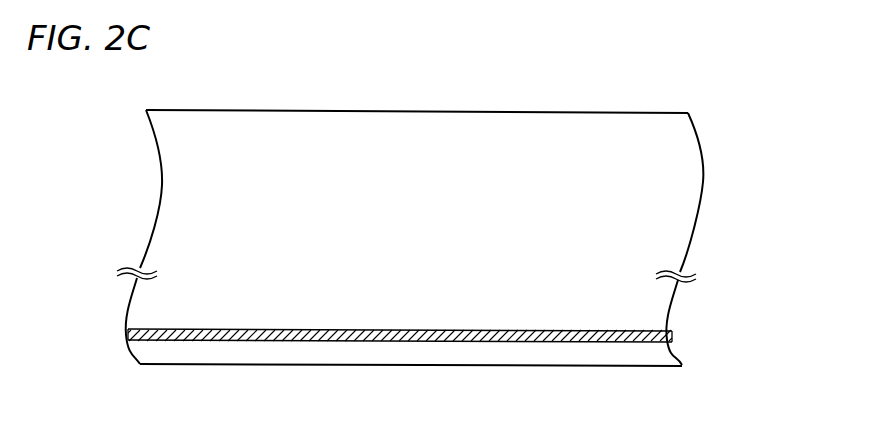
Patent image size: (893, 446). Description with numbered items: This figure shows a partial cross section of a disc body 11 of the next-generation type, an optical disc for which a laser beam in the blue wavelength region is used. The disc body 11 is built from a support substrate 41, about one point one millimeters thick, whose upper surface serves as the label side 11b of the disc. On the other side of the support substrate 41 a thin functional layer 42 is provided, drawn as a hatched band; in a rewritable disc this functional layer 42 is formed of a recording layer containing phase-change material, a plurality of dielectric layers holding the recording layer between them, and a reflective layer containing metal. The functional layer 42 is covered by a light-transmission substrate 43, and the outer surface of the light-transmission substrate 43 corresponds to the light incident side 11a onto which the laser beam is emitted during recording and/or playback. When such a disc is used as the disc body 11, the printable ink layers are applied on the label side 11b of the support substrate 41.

The disc body 11 is at (314, 97).
The light incident side 11a is at (360, 365).
The label side 11b is at (588, 112).
The support substrate 41 is at (691, 221).
The functional layer 42 is at (672, 336).
The light-transmission substrate 43 is at (664, 357).